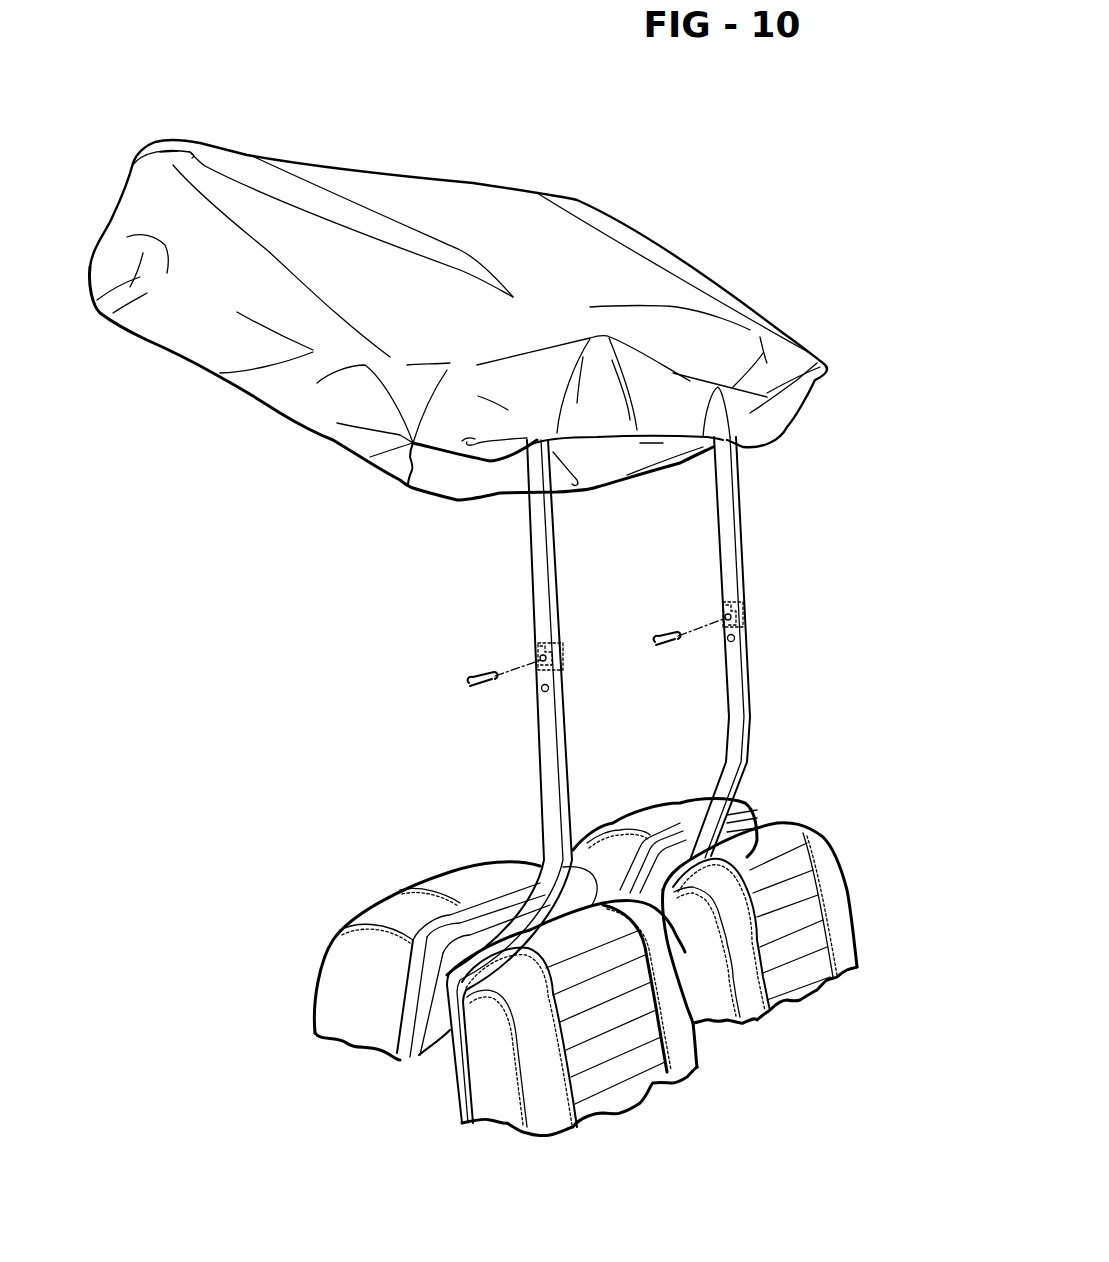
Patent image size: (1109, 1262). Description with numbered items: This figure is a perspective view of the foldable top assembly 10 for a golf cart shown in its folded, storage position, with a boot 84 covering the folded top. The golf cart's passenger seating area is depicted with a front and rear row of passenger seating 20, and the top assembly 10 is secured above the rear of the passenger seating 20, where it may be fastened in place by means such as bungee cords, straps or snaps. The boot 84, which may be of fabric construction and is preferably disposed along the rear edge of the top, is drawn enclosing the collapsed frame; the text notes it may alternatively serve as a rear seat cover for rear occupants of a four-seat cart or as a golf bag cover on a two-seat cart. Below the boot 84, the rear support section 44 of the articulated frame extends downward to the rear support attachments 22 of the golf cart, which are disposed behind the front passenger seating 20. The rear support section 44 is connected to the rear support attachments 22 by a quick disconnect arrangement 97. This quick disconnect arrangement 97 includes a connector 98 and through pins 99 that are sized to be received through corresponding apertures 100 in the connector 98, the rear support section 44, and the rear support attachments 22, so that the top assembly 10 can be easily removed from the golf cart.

The foldable top assembly 10 is at (381, 159).
The rows of passenger seating 20 is at (450, 872).
The rear support attachments 22 is at (727, 720).
The rear support section 44 is at (561, 556).
The boot 84 is at (618, 214).
The quick disconnect arrangement 97 is at (565, 655).
The connector 98 is at (538, 648).
The through pins 99 is at (477, 676).
The apertures 100 is at (562, 647).